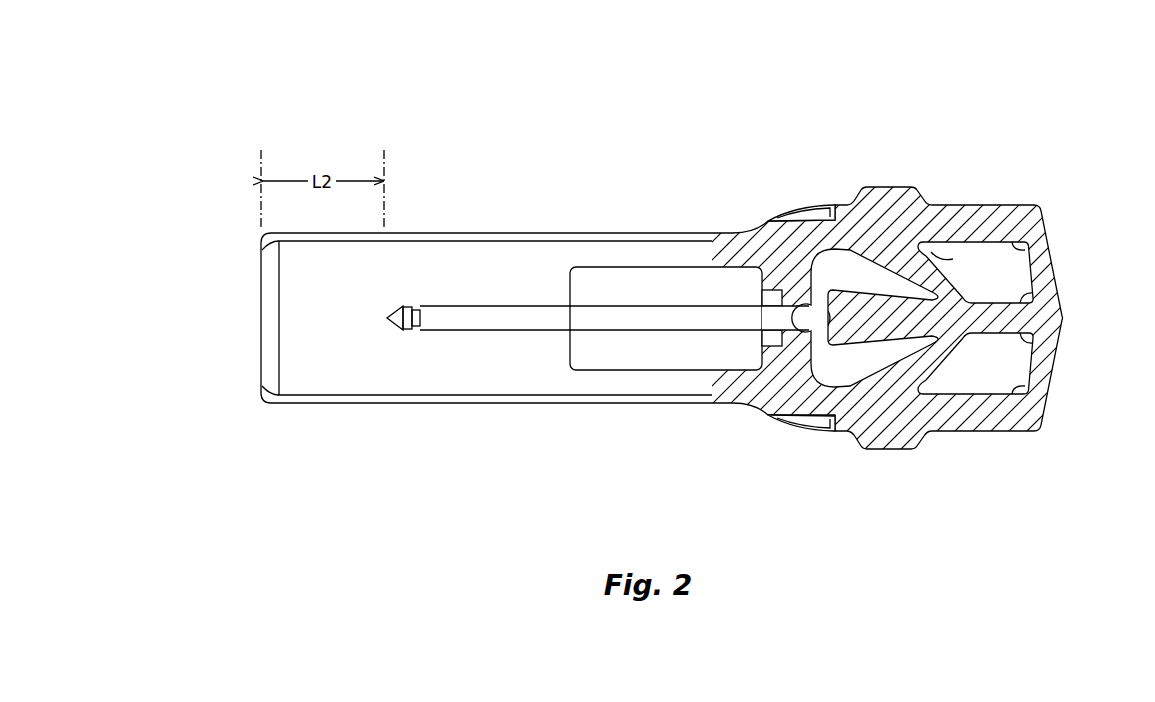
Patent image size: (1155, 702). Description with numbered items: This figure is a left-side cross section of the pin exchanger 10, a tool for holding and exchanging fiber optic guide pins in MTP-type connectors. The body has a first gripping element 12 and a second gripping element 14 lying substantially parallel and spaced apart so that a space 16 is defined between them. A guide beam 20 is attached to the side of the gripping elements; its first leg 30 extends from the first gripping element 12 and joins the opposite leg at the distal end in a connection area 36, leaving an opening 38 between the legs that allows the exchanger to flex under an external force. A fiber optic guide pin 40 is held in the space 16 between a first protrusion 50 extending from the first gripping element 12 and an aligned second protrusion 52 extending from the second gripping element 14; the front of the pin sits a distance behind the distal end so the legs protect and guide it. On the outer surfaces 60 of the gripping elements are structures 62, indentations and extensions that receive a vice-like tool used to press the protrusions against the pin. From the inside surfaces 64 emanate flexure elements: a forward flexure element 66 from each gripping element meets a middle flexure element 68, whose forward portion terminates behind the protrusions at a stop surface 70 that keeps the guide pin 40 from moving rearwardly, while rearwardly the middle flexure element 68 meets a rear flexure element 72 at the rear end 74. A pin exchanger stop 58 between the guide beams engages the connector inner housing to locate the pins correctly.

The pin exchanger 10 is at (1052, 108).
The first gripping element 12 is at (1038, 205).
The second gripping element 14 is at (1040, 431).
The space 16 is at (1017, 352).
The guide beam 20 is at (492, 222).
The first leg 30 is at (617, 233).
The connection area 36 is at (349, 367).
The opening 38 is at (636, 295).
The fiber optic guide pin 40 is at (526, 325).
The first protrusion 50 is at (762, 278).
The second protrusion 52 is at (758, 368).
The pin exchanger stop 58 is at (712, 250).
The outer surface 60 is at (967, 205).
The structure 62 is at (808, 214).
The inside surface 64 is at (1027, 250).
The forward flexure element 66 is at (935, 253).
The middle flexure element 68 is at (1025, 297).
The stop surface 70 is at (813, 297).
The rear flexure element 72 is at (1037, 390).
The rear end 74 is at (1066, 306).